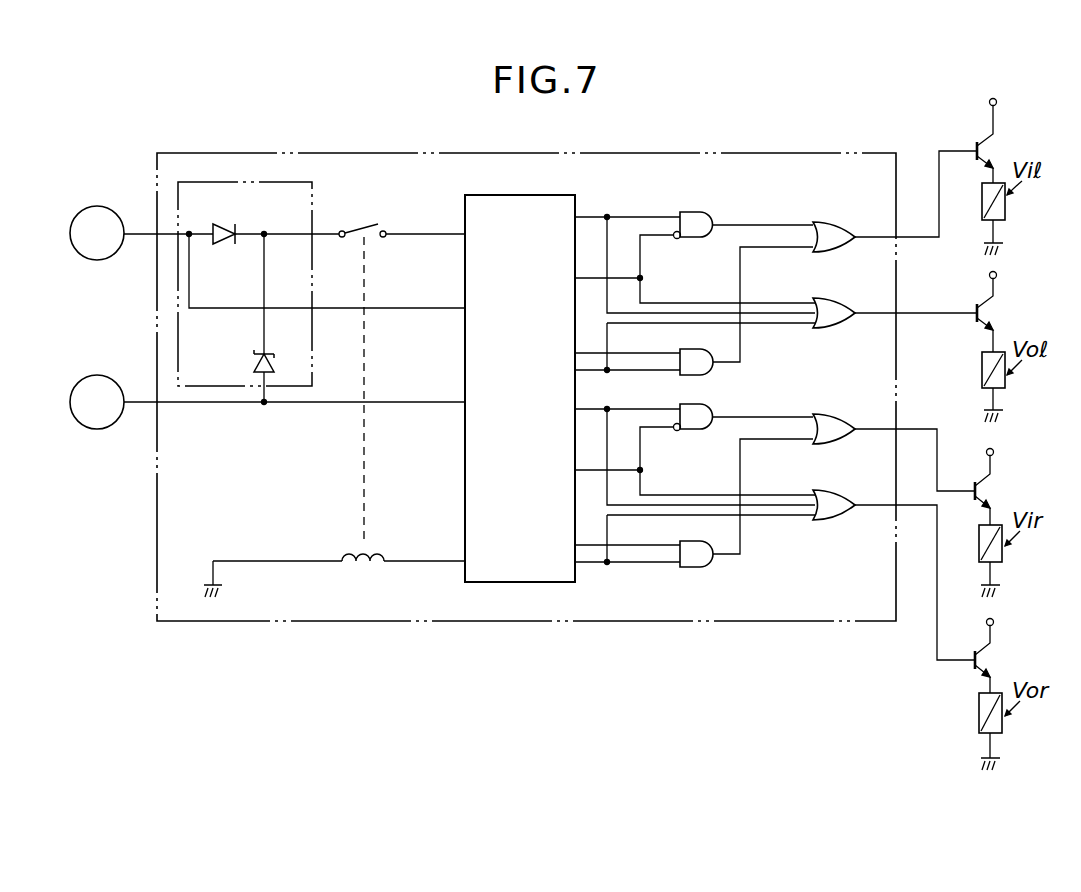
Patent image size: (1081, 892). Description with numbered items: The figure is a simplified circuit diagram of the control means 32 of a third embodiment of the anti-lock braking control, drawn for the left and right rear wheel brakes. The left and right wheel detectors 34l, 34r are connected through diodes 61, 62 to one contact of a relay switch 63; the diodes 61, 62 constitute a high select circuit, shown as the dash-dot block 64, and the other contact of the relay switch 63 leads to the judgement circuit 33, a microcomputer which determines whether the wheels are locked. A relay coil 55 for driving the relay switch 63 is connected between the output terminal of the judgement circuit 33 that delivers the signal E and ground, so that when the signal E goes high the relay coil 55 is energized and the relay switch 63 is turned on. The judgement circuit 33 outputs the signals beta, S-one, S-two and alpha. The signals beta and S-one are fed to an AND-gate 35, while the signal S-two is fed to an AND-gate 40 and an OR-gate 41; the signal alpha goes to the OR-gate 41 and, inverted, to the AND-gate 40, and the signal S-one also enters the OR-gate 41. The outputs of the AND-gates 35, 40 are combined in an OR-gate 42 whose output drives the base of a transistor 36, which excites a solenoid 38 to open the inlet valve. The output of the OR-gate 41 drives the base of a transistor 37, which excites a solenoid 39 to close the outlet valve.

The control means 32 is at (370, 152).
The judgement circuit 33 is at (536, 194).
The left wheel detector 34l is at (109, 246).
The right wheel detector 34r is at (109, 415).
The AND-gate 35 is at (710, 372).
The transistor 36 is at (975, 148).
The transistor 37 is at (975, 310).
The solenoid 38 is at (1005, 214).
The solenoid 39 is at (1005, 383).
The AND-gate 40 is at (703, 207).
The OR-gate 41 is at (838, 304).
The OR-gate 42 is at (836, 226).
The relay coil 55 is at (384, 555).
The diode 61 is at (226, 222).
The diode 62 is at (270, 362).
The relay switch 63 is at (370, 226).
The protection circuit 64 is at (314, 198).